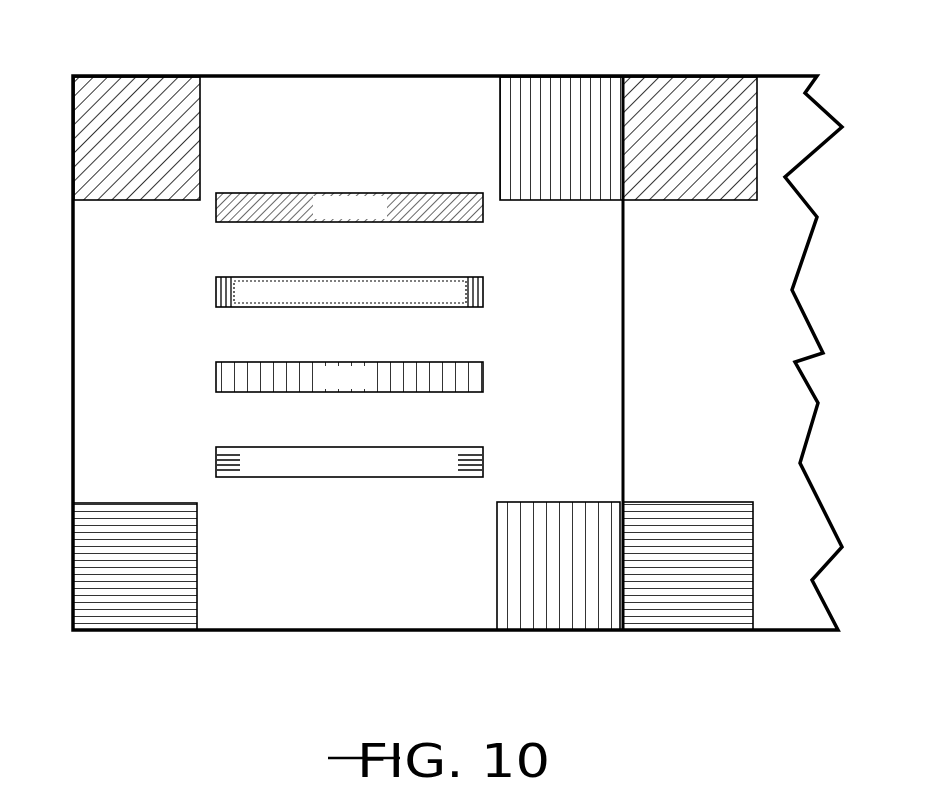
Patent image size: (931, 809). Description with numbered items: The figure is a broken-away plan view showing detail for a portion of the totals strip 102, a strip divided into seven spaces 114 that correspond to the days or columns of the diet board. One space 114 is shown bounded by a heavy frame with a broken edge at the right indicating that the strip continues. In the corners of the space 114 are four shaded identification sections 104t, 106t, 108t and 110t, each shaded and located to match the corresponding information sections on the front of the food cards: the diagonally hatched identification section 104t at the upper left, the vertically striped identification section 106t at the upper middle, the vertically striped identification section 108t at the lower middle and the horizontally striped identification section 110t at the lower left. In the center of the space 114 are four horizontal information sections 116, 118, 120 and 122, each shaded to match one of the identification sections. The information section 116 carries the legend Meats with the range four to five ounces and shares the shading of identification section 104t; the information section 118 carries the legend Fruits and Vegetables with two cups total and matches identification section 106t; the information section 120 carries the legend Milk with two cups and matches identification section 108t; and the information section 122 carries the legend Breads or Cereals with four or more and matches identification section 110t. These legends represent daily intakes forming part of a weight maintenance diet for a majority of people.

The totals strip 102 is at (73, 282).
The identification section 104t is at (150, 76).
The identification section 106t is at (562, 76).
The identification section 108t is at (562, 631).
The identification section 110t is at (130, 632).
The space 114 is at (345, 76).
The information section 116 is at (487, 210).
The information section 118 is at (492, 289).
The information section 120 is at (487, 377).
The information section 122 is at (492, 459).